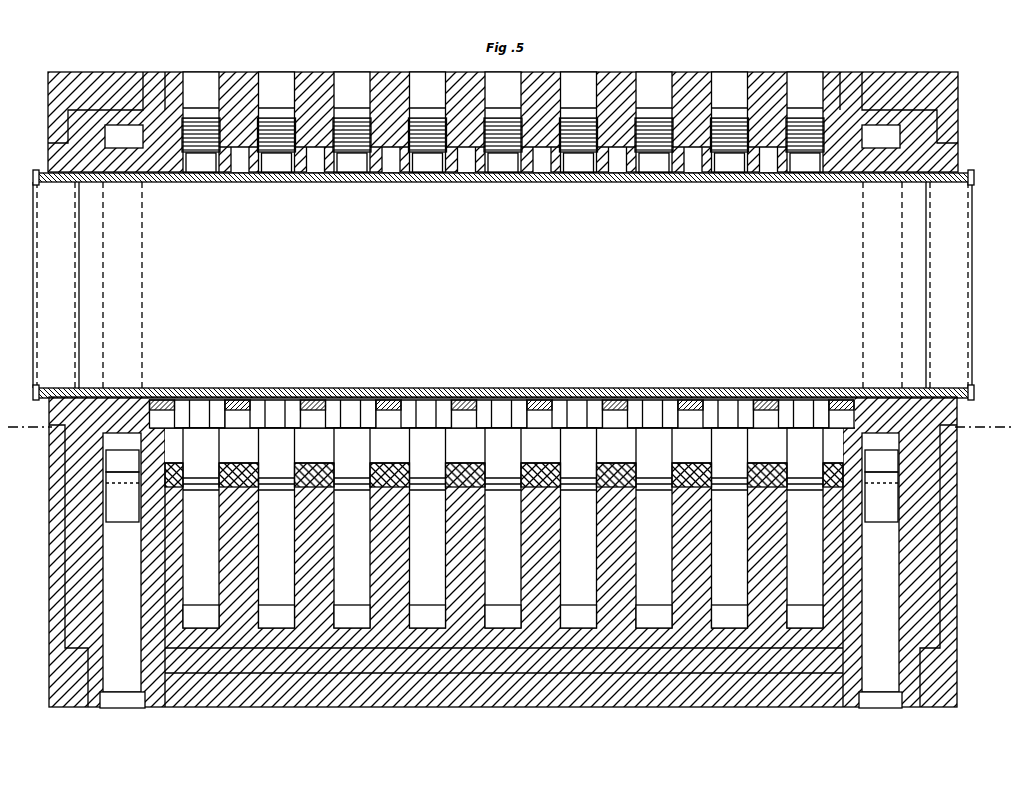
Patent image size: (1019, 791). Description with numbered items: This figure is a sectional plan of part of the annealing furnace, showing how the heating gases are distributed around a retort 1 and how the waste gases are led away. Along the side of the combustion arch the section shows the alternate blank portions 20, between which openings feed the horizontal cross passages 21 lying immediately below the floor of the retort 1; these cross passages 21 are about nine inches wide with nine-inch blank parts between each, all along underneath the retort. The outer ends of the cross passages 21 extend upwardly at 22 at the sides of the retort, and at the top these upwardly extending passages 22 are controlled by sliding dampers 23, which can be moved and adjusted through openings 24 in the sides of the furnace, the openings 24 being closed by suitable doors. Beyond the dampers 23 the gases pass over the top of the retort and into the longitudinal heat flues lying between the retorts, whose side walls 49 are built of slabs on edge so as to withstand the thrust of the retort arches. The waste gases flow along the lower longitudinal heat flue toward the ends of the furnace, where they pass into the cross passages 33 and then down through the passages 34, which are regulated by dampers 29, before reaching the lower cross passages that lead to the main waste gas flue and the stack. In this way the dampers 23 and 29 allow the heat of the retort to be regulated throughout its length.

The retort 1 is at (270, 263).
The blank portions 20 is at (243, 528).
The horizontal cross passages 21 is at (503, 528).
The upwardly extending passages 22 is at (207, 165).
The sliding dampers 23 is at (357, 140).
The openings 24 is at (503, 122).
The dampers 29 is at (502, 497).
The cross passages 33 is at (501, 570).
The passages 34 is at (502, 461).
The side wall 49 is at (502, 414).